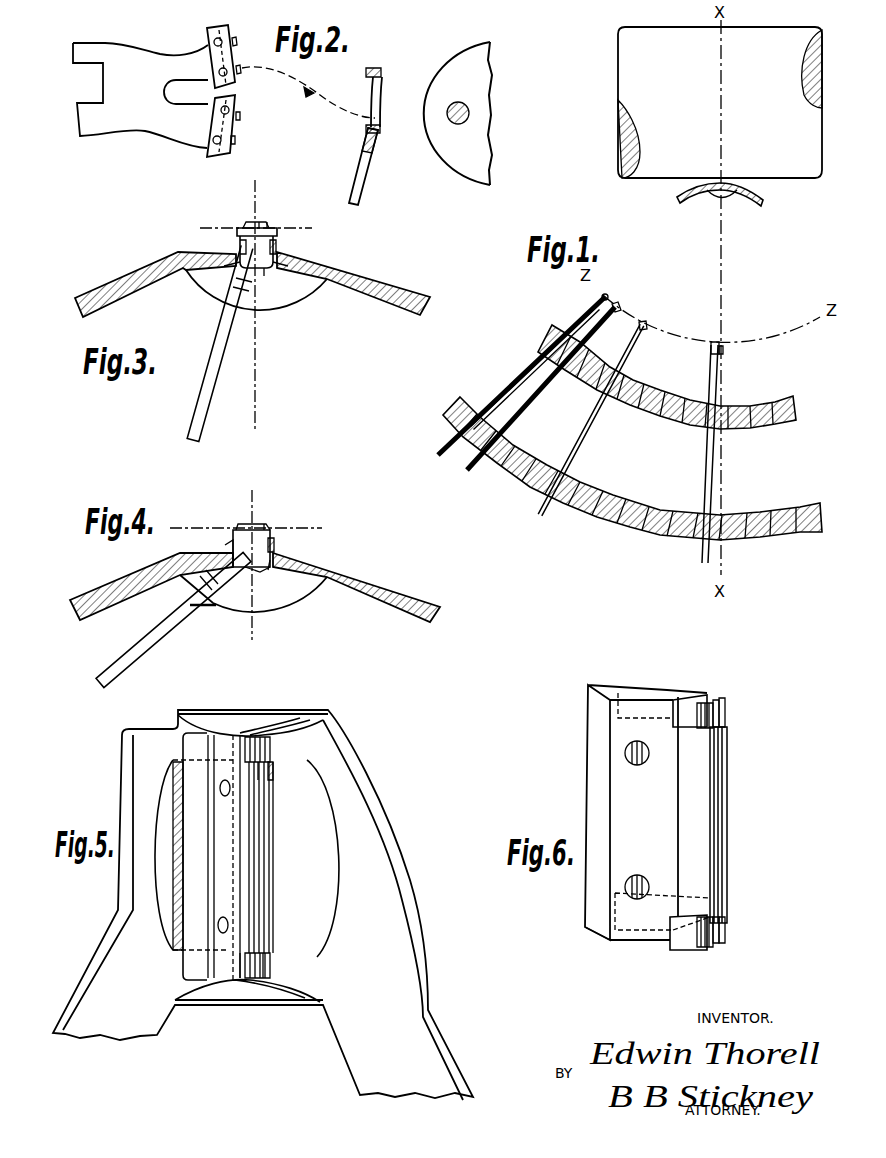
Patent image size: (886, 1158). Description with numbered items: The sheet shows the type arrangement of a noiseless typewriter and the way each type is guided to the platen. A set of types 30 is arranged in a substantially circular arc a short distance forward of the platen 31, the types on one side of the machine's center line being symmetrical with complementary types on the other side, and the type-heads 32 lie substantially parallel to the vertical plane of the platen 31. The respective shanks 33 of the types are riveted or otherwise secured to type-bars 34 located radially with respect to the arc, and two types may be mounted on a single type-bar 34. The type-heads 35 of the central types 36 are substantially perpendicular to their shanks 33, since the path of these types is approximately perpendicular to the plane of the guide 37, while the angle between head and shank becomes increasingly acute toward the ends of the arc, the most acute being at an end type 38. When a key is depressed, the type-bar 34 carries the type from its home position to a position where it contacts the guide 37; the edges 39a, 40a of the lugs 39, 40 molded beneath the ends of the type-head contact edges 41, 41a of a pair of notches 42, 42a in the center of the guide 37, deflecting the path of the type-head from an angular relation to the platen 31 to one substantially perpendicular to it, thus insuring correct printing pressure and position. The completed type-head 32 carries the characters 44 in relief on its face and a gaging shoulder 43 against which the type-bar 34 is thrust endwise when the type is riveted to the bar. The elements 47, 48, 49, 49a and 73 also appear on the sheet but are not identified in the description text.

In FIG. 2, the type 30 is at (207, 28).
In FIG. 1, the type 30 is at (644, 314).
In FIG. 4, the type 30 is at (202, 618).
In FIG. 5, the type 30 is at (183, 965).
In FIG. 6, the type 30 is at (587, 792).
In FIG. 2, the platen 31 is at (458, 113).
In FIG. 1, the platen 31 is at (720, 102).
In FIG. 2, the type-head 32 is at (232, 36).
In FIG. 1, the type-head 32 is at (638, 326).
In FIG. 3, the type-head 32 is at (238, 229).
In FIG. 4, the type-head 32 is at (237, 530).
In FIG. 5, the type-head 32 is at (273, 865).
In FIG. 6, the type-head 32 is at (728, 826).
In FIG. 2, the shank 33 is at (208, 58).
In FIG. 1, the shank 33 is at (640, 340).
In FIG. 3, the shank 33 is at (262, 312).
In FIG. 4, the shank 33 is at (220, 606).
In FIG. 5, the shank 33 is at (229, 856).
In FIG. 6, the shank 33 is at (647, 813).
In FIG. 2, the type-bar 34 is at (140, 95).
In FIG. 1, the type-bar 34 is at (516, 395).
In FIG. 3, the type-bar 34 is at (213, 385).
In FIG. 4, the type-bar 34 is at (140, 650).
In FIG. 5, the type-bar 34 is at (172, 784).
In FIG. 1, the type-head 35 is at (712, 342).
In FIG. 1, the central type 36 is at (710, 352).
In FIG. 3, the central type 36 is at (265, 253).
In FIG. 2, the guide 37 is at (383, 62).
In FIG. 1, the guide 37 is at (771, 205).
In FIG. 3, the guide 37 is at (373, 263).
In FIG. 4, the guide 37 is at (360, 566).
In FIG. 5, the guide 37 is at (263, 905).
In FIG. 1, the end type 38 is at (603, 297).
In FIG. 4, the end type 38 is at (236, 545).
In FIG. 3, the lug 39 is at (264, 272).
In FIG. 4, the lug 39 is at (272, 568).
In FIG. 5, the lug 39 is at (262, 765).
In FIG. 6, the lug 39 is at (692, 728).
In FIG. 3, the edge of lug 39a is at (277, 246).
In FIG. 4, the edge of lug 39a is at (276, 545).
In FIG. 5, the edge of lug 39a is at (273, 760).
In FIG. 6, the edge of lug 39a is at (720, 710).
In FIG. 2, the lug 40 is at (208, 85).
In FIG. 5, the lug 40 is at (242, 953).
In FIG. 6, the lug 40 is at (684, 950).
In FIG. 5, the edge of lug 40a is at (270, 955).
In FIG. 6, the edge of lug 40a is at (716, 945).
In FIG. 3, the notch edge 41 is at (226, 266).
In FIG. 4, the notch edge 41 is at (252, 570).
In FIG. 5, the notch edge 41 is at (271, 744).
In FIG. 5, the notch edge 41a is at (271, 965).
In FIG. 2, the notch 42 is at (366, 73).
In FIG. 5, the notch 42 is at (240, 733).
In FIG. 2, the notch 42a is at (366, 129).
In FIG. 1, the notch 42a is at (728, 197).
In FIG. 5, the notch 42a is at (235, 982).
In FIG. 3, the gaging shoulder 43 is at (240, 245).
In FIG. 4, the gaging shoulder 43 is at (228, 548).
In FIG. 6, the gaging shoulder 43 is at (688, 705).
In FIG. 2, the characters 44 is at (237, 46).
In FIG. 1, the characters 44 is at (608, 294).
In FIG. 3, the characters 44 is at (248, 222).
In FIG. 4, the characters 44 is at (260, 524).
In FIG. 6, the hole 47 is at (647, 757).
In FIG. 4, the tab 48 is at (222, 578).
In FIG. 6, the tab 48 is at (650, 690).
In FIG. 2, the lip 49 is at (236, 88).
In FIG. 3, the lip 49 is at (261, 221).
In FIG. 4, the lip 49 is at (267, 527).
In FIG. 6, the lip 49 is at (722, 698).
In FIG. 1, the lip 49a is at (723, 348).
In FIG. 3, the lip 49a is at (270, 225).
In FIG. 3, the sleeve 73 is at (238, 320).
In FIG. 6, the sleeve 73 is at (590, 936).